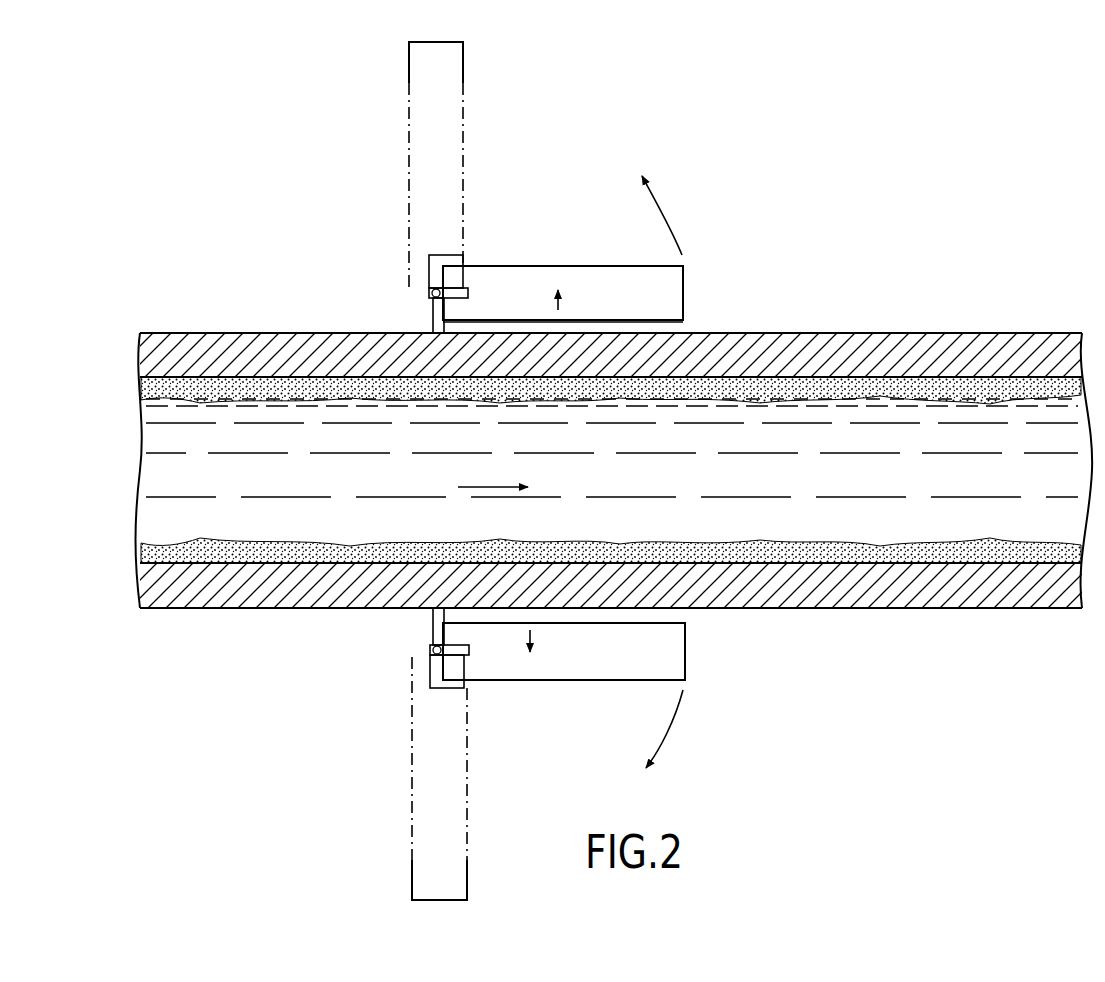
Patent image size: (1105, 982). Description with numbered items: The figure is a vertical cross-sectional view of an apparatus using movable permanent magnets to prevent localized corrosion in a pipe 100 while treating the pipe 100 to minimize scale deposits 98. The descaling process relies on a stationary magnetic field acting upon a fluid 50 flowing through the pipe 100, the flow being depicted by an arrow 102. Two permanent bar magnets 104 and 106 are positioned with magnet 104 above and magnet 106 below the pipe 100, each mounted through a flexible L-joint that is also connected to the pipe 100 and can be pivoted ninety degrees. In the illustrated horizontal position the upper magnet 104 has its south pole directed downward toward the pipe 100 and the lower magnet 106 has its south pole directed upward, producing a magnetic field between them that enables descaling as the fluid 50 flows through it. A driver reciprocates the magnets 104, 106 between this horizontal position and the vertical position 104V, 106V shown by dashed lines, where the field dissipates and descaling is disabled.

The fluid 50 is at (614, 471).
The scale deposits 98 is at (566, 400).
The pipe 100 is at (835, 333).
The arrow 102 is at (458, 487).
The permanent bar magnet 104 is at (684, 293).
The vertical position of magnet 104 104V is at (463, 42).
The permanent bar magnet 106 is at (685, 648).
The vertical position of magnet 106 106V is at (490, 893).